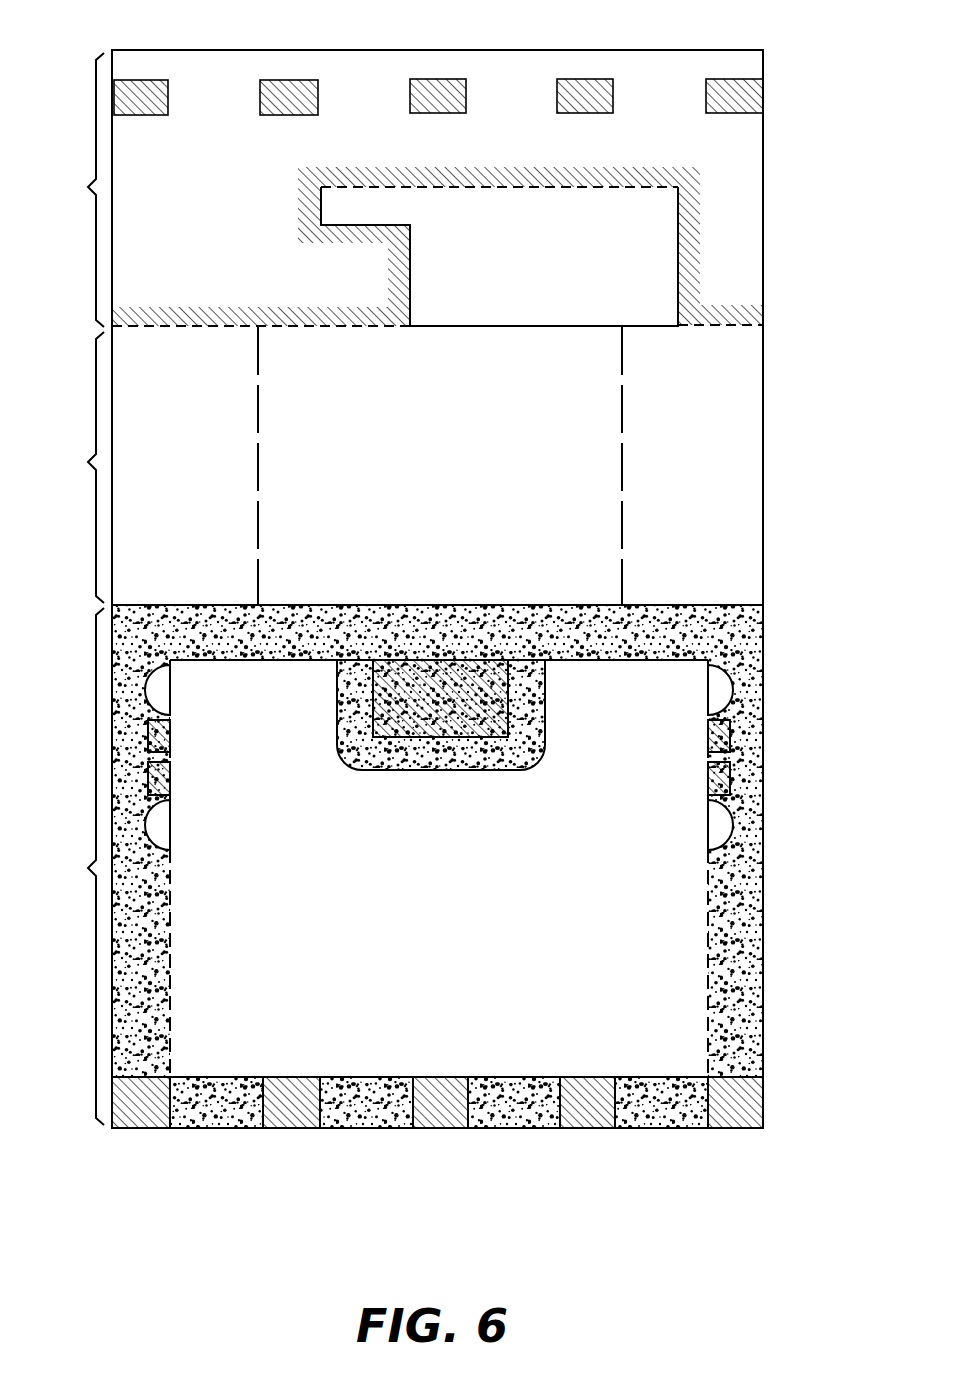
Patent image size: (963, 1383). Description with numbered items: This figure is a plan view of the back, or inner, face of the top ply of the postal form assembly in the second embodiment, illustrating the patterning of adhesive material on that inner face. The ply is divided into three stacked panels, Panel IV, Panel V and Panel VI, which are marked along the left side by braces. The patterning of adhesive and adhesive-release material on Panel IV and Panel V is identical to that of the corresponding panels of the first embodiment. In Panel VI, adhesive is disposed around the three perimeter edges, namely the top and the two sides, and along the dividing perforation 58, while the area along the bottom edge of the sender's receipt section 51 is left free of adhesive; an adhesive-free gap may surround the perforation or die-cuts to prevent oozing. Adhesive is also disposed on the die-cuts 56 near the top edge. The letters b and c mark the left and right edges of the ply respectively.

The die-cuts 56 is at (157, 100).
The sender's receipt section 51 is at (614, 258).
The dividing perforation 58 is at (710, 329).
The section c is at (763, 199).
The section b is at (113, 256).
The Panel VI is at (81, 190).
The Panel V is at (84, 467).
The Panel IV is at (81, 866).